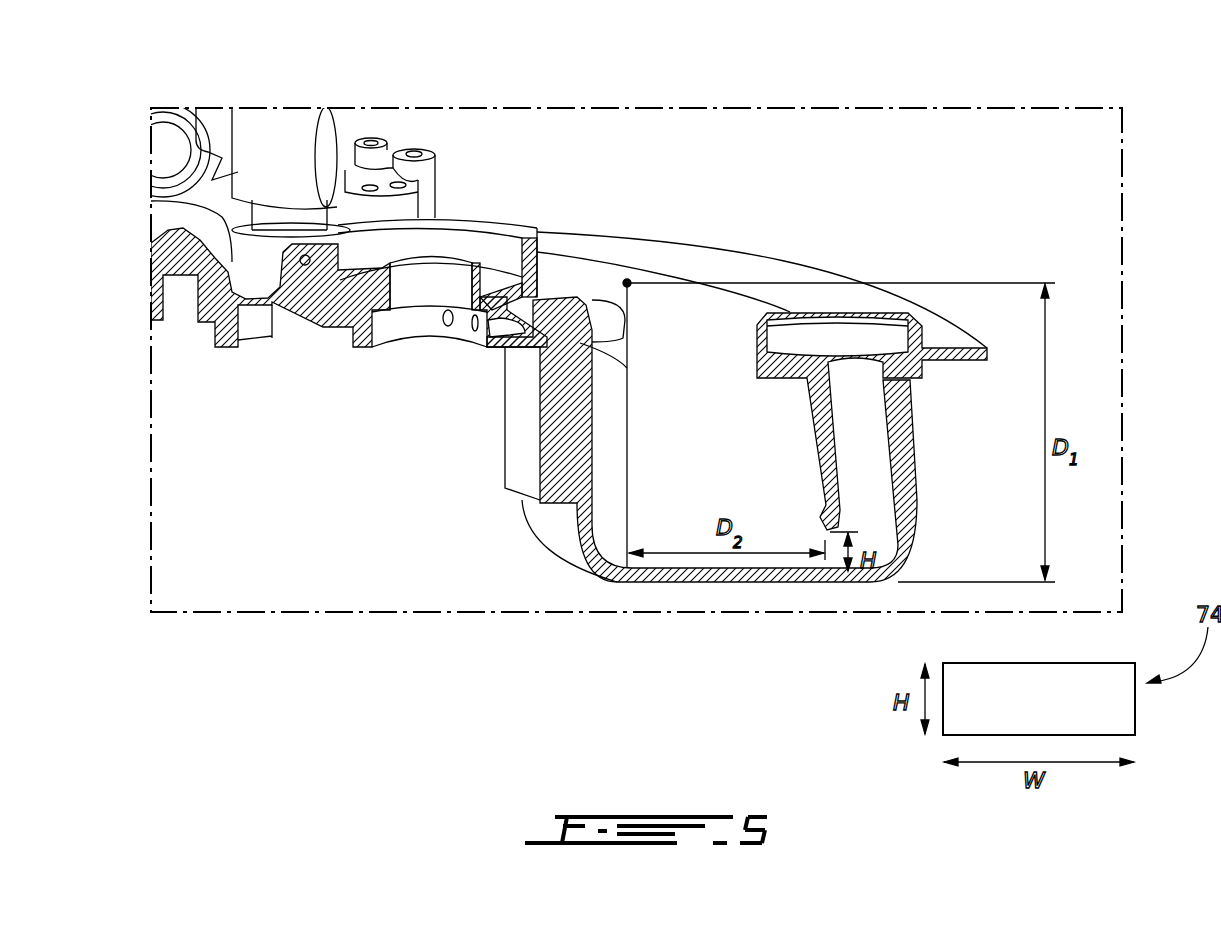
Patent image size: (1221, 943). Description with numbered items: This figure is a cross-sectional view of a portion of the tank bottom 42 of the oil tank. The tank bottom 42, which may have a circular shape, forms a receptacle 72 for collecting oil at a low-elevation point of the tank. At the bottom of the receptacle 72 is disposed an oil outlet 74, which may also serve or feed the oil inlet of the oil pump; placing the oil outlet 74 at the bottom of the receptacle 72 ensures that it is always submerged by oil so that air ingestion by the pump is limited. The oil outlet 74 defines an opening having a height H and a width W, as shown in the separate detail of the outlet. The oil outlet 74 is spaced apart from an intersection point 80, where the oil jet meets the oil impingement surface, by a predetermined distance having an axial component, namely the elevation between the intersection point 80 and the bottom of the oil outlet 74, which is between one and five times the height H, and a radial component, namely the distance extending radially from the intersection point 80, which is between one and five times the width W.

The tank bottom 42 is at (614, 266).
The intersection point 80 is at (628, 282).
The receptacle 72 is at (697, 431).
The oil outlet 74 is at (805, 536).